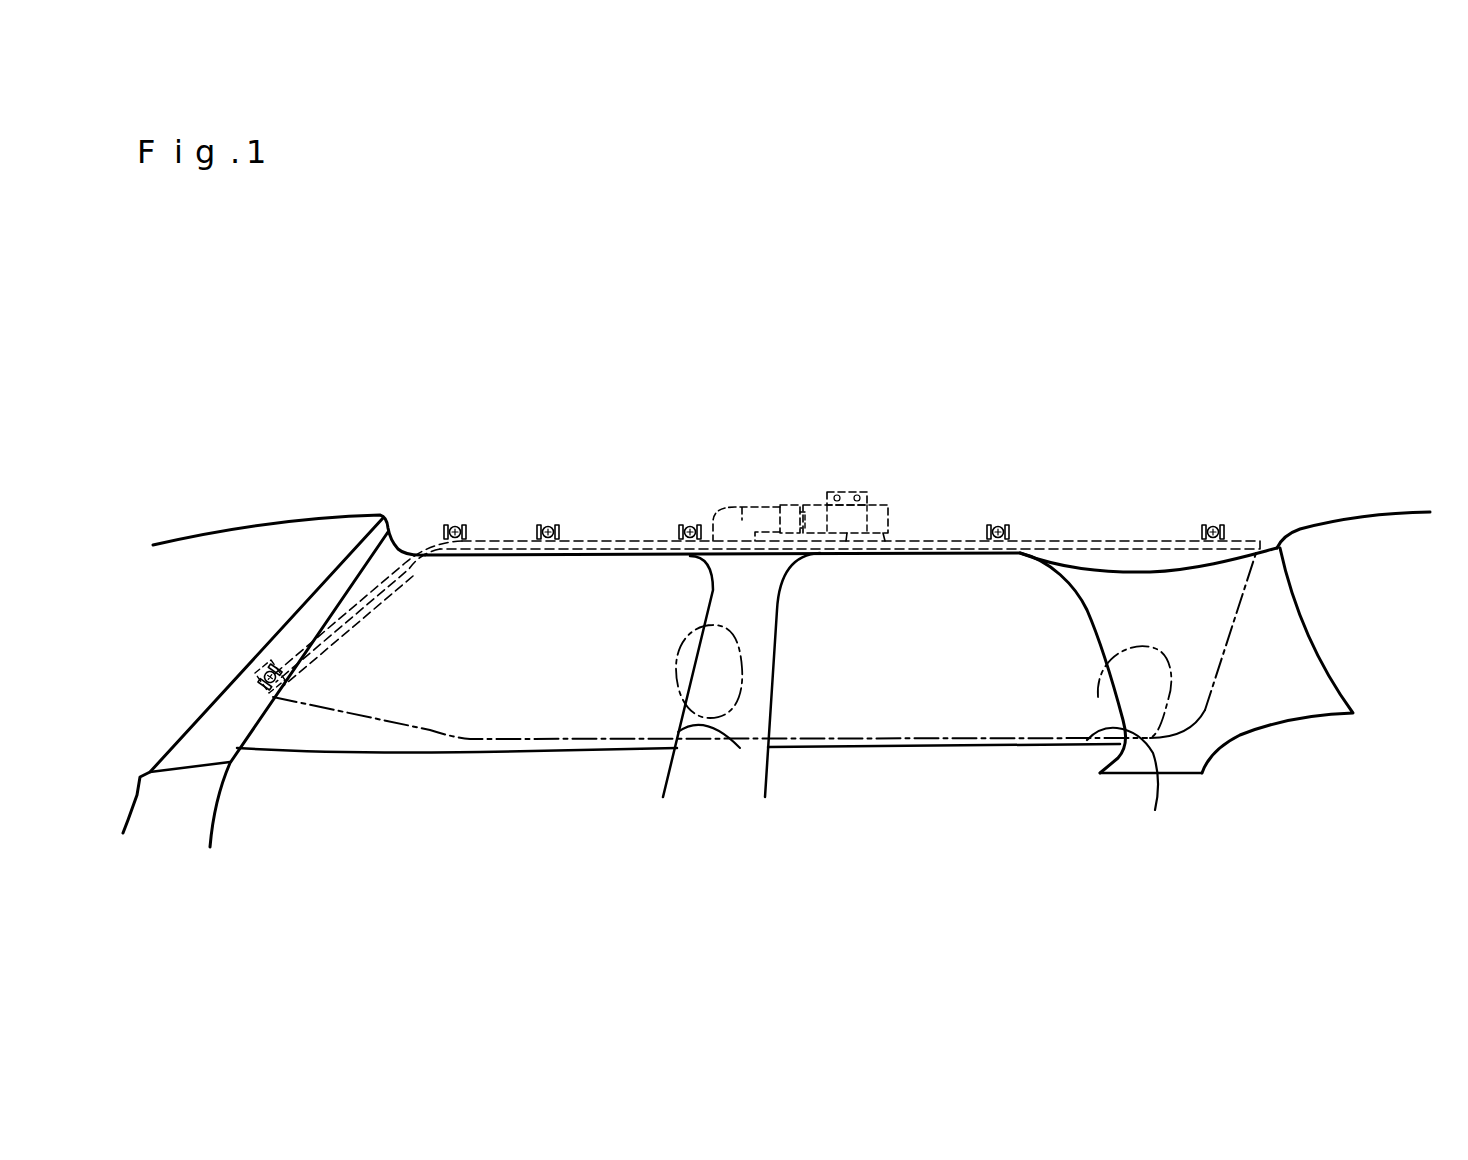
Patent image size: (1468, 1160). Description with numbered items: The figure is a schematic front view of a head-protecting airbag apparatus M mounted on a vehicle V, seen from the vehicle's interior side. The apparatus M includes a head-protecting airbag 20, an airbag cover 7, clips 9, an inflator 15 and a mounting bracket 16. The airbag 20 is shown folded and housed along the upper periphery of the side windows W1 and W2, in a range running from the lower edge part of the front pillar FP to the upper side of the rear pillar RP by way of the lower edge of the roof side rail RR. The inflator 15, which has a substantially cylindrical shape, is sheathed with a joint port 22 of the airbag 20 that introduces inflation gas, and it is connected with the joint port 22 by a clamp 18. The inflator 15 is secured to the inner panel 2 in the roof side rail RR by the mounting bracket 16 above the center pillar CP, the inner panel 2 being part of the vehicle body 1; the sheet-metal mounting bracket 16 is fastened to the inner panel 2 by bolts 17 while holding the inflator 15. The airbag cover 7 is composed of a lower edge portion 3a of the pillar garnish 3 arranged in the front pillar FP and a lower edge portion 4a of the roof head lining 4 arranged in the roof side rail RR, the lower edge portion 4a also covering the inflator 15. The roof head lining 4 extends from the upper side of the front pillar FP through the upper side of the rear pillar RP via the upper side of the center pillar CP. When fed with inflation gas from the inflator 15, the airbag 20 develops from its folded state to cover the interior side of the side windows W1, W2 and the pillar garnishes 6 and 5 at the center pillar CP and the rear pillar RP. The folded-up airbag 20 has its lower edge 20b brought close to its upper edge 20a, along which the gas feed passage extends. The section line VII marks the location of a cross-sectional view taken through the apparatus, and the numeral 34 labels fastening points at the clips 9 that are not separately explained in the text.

The vehicle body 1 is at (536, 448).
The inner panel 2 is at (407, 500).
The pillar garnish 3 is at (323, 610).
The lower edge portion of the pillar garnish 3a is at (325, 645).
The roof head lining 4 is at (630, 463).
The lower edge portion of the roof head lining 4a is at (572, 555).
The pillar garnish 5 is at (1270, 700).
The pillar garnish 6 is at (757, 722).
The airbag cover 7 is at (757, 679).
The clips 9 is at (449, 528).
The inflator 15 is at (885, 547).
The mounting bracket 16 is at (862, 547).
The bolts 17 is at (852, 490).
The clamp 18 is at (790, 520).
The head-protecting airbag 20 is at (1118, 540).
The upper edge of the airbag 20a is at (603, 537).
The lower edge of the airbag 20b is at (537, 735).
The joint port 22 is at (742, 515).
The bolt 34 is at (465, 528).
The vehicle V is at (297, 446).
The head-protecting airbag apparatus M is at (1168, 412).
The front pillar FP is at (233, 654).
The rear pillar RP is at (1320, 634).
The roof side rail RR is at (905, 480).
The center pillar CP is at (783, 697).
The side window W1 is at (343, 742).
The side window W2 is at (905, 725).
The section line VII- VII is at (1000, 462).